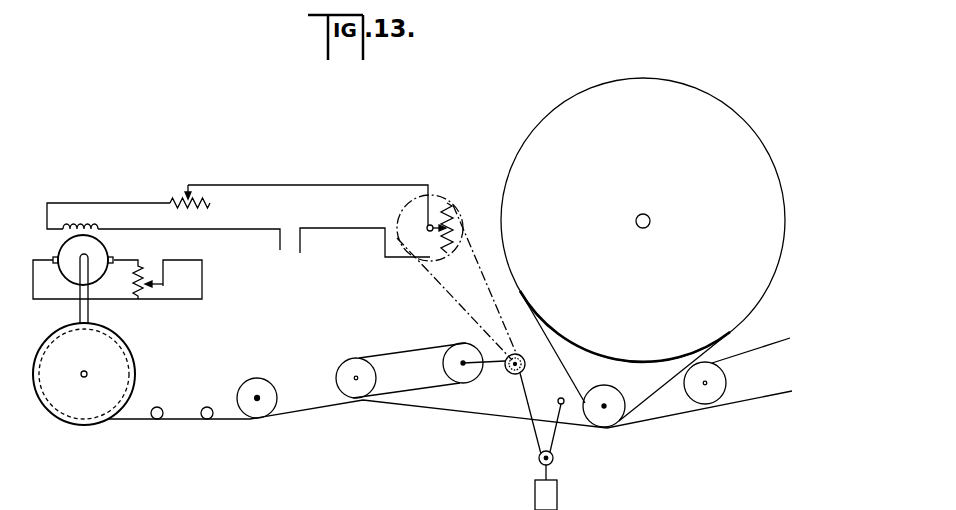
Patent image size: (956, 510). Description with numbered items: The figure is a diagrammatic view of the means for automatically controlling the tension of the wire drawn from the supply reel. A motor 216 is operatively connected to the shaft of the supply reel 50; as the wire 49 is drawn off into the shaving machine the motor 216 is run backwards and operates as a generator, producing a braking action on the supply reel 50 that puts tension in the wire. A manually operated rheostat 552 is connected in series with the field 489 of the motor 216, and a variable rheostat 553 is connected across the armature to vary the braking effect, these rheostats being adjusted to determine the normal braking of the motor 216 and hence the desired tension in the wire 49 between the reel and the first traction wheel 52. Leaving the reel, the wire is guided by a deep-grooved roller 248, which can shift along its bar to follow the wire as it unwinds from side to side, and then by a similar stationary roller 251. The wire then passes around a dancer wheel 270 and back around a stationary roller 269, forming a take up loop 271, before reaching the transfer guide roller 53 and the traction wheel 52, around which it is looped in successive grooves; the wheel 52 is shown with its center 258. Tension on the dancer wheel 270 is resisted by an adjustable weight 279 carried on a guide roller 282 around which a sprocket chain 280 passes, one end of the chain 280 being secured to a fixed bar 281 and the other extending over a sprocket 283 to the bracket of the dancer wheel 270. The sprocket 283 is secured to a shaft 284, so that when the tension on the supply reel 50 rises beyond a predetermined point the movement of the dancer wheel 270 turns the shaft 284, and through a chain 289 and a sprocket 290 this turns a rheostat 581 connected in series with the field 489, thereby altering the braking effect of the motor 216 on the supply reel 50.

The traction wheel 52 is at (596, 82).
The drum axis 258 is at (648, 227).
The sprocket 290 is at (410, 208).
The rheostat 581 is at (447, 210).
The chain 289 is at (432, 276).
The shaft 284 is at (523, 357).
The sprocket 283 is at (510, 371).
The stationary roller 269 is at (351, 358).
The dancer roller 270 is at (458, 347).
The take up loop 271 is at (400, 345).
The wire 49 is at (452, 412).
The transfer guide roller 53 is at (606, 418).
The roller 248 is at (159, 407).
The roller 251 is at (209, 407).
The sprocket chain 280 is at (534, 431).
The fixed bar 281 is at (562, 398).
The guide roller 282 is at (538, 459).
The adjustable weight 279 is at (557, 497).
The supply reel 50 is at (68, 421).
The motor 216 is at (60, 246).
The variable rheostat 553 is at (146, 291).
The field 489 is at (84, 224).
The manually operated rheostat 552 is at (186, 185).